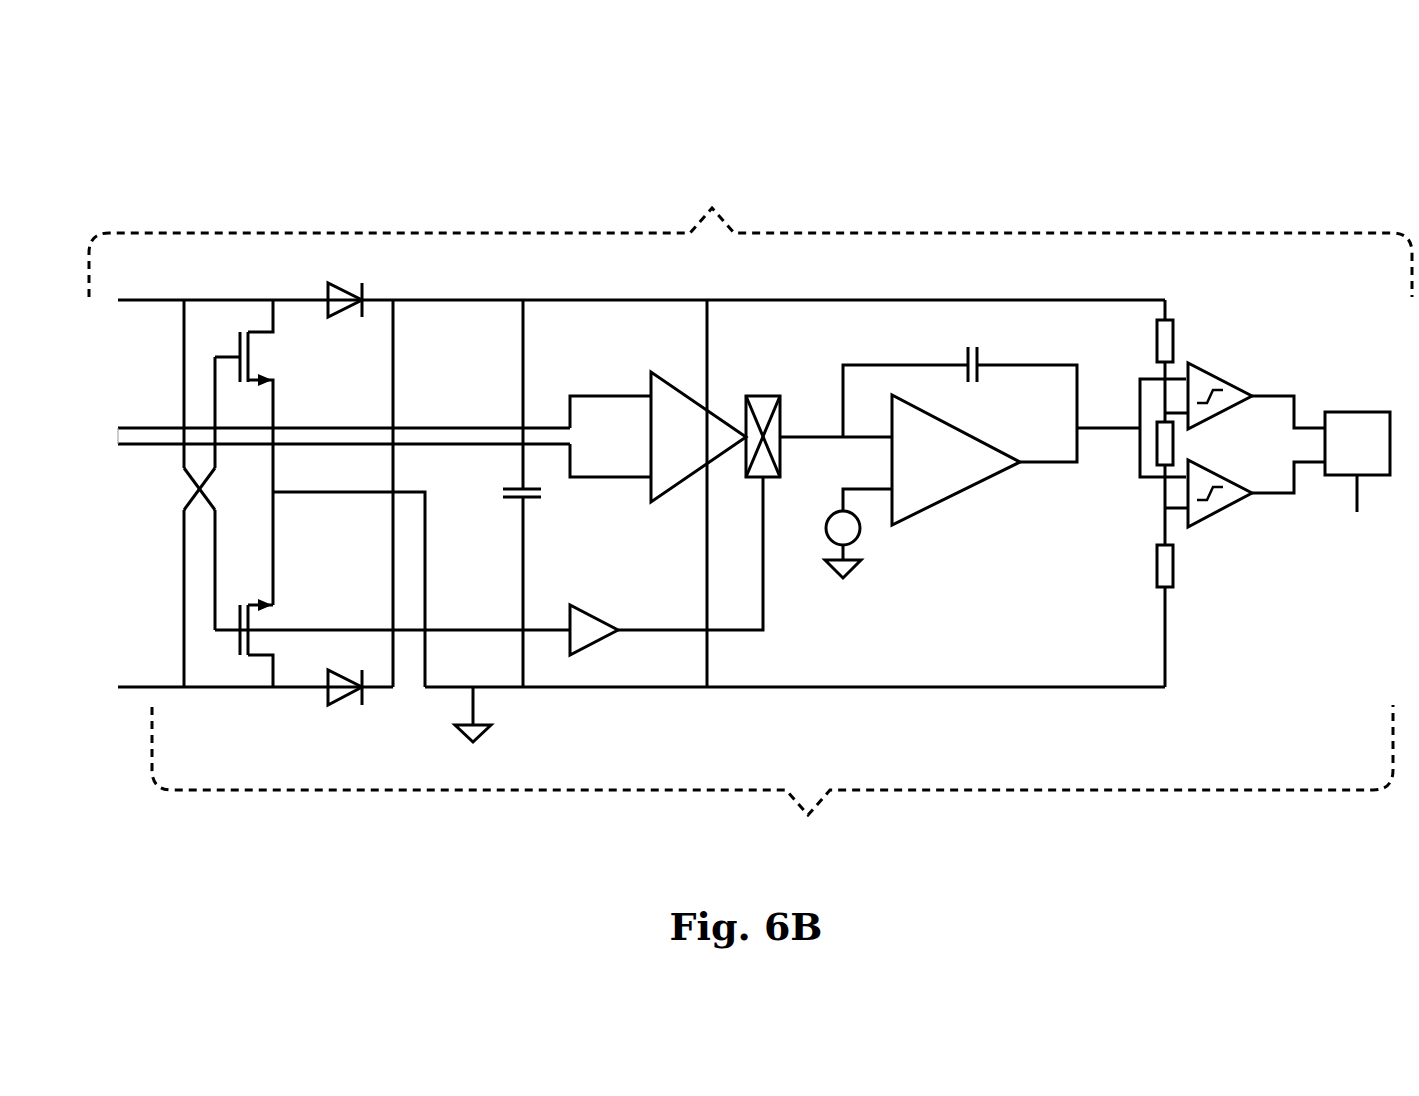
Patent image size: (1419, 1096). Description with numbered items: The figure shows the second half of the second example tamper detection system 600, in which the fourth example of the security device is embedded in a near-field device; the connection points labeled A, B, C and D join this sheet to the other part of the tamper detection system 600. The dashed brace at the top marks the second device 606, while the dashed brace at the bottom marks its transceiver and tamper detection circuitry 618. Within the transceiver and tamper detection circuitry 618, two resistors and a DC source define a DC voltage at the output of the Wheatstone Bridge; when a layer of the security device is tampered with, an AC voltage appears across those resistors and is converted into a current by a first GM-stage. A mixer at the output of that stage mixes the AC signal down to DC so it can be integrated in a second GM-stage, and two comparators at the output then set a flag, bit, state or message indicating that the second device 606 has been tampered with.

The tamper detection system 600 is at (216, 100).
The second device 606 is at (750, 238).
The transceiver and tamper detection circuitry 618 is at (772, 776).